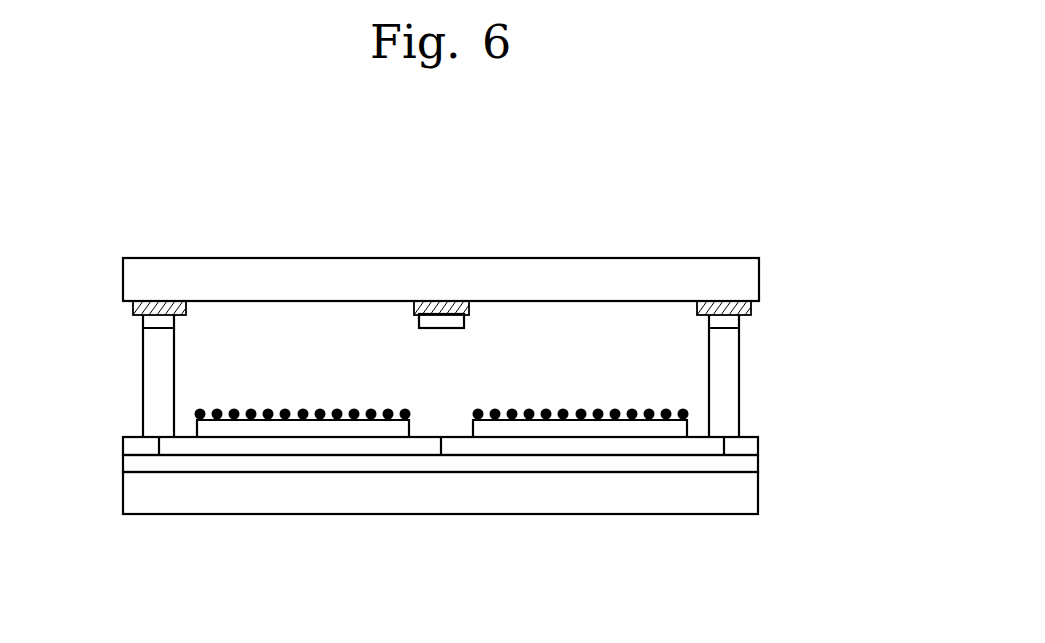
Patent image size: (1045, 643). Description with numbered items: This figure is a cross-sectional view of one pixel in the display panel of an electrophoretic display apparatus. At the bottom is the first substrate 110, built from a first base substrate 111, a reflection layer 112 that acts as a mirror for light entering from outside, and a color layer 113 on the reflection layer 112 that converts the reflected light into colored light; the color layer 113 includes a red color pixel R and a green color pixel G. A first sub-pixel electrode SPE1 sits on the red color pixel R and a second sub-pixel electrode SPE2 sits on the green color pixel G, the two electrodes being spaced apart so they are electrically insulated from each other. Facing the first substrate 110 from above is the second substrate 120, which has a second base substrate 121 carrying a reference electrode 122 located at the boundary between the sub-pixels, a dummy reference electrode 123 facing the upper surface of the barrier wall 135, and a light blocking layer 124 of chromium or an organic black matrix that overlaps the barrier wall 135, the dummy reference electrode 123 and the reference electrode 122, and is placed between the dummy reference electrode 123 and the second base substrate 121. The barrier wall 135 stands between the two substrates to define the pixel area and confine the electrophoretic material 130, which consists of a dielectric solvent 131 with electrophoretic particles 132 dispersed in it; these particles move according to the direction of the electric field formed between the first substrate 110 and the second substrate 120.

The first substrate 110 is at (841, 452).
The first base substrate 111 is at (752, 497).
The reflection layer 112 is at (752, 462).
The color layer 113 is at (440, 524).
The second substrate 120 is at (760, 200).
The second base substrate 121 is at (580, 258).
The reference electrode 122 is at (447, 320).
The dummy reference electrode 123 is at (150, 320).
The light blocking layer 124 is at (132, 304).
The electrophoretic material 130 is at (841, 333).
The dielectric solvent 131 is at (691, 345).
The electrophoretic particles 132 is at (690, 414).
The barrier wall 135 is at (153, 383).
The first sub-pixel electrode SPE1 is at (300, 428).
The second sub-pixel electrode SPE2 is at (585, 428).
The red color pixel R is at (398, 445).
The green color pixel G is at (490, 445).